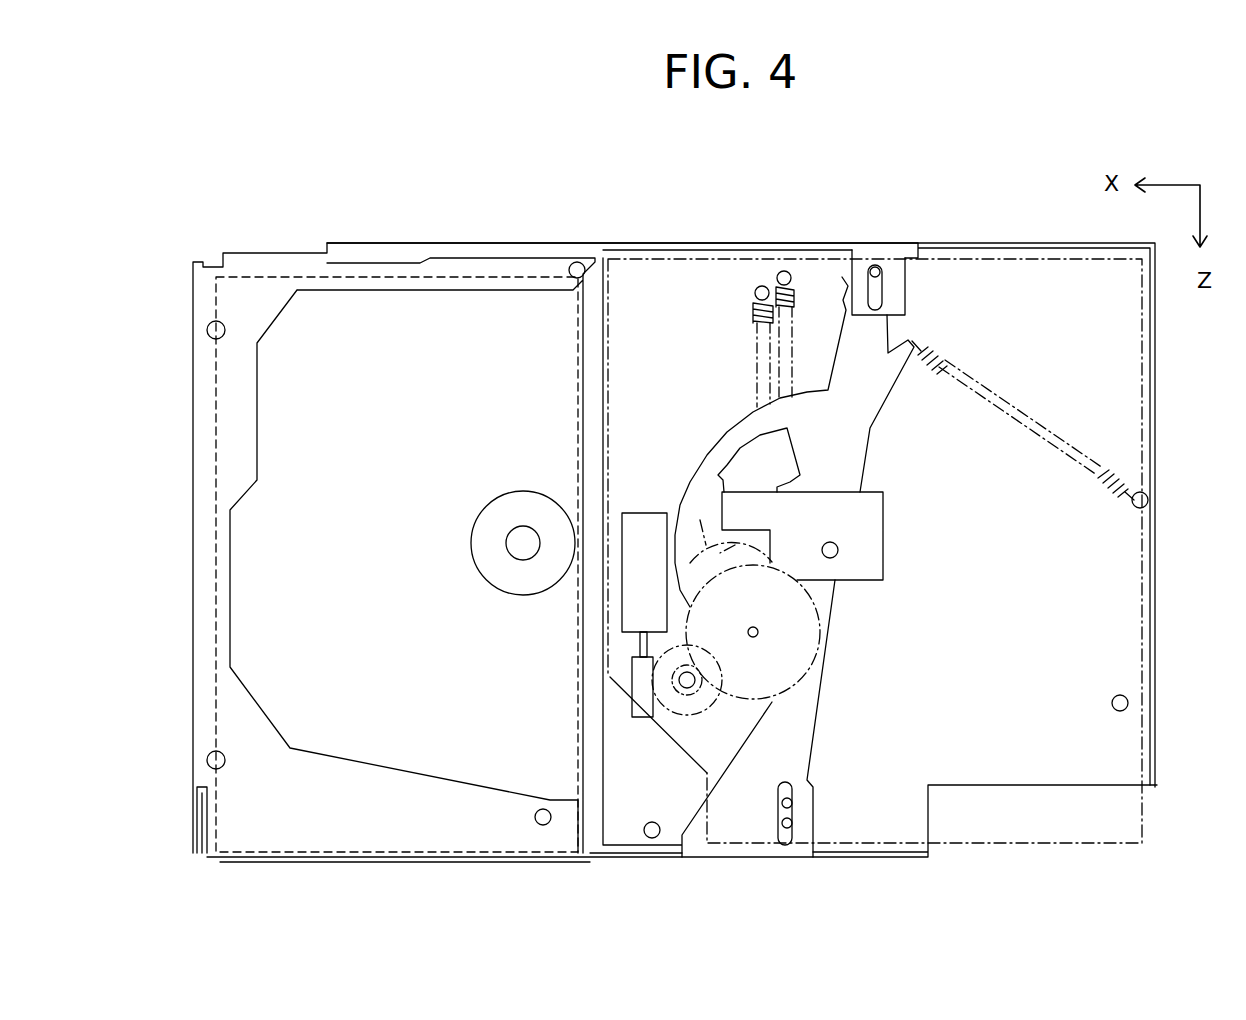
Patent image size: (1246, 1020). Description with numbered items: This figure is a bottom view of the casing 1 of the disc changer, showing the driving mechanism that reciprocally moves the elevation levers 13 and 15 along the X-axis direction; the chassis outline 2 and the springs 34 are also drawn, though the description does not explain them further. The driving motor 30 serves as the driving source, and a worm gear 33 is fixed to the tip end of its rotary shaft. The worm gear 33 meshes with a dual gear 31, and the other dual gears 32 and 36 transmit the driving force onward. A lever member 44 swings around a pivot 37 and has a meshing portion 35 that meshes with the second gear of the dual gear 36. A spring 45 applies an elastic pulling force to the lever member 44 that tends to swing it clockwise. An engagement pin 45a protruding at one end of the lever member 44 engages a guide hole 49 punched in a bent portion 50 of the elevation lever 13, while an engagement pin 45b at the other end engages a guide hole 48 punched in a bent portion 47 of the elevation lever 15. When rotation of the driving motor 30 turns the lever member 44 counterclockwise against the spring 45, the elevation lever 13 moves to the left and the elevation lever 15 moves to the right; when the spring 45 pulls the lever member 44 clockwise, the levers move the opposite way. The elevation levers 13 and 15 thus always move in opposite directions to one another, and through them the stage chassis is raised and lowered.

The casing 1 is at (1068, 242).
The chassis 2 is at (1007, 258).
The elevation lever 13 is at (640, 242).
The elevation lever 15 is at (437, 860).
The driving motor 30 is at (648, 513).
The dual gear 31 is at (707, 708).
The dual gear 32 is at (803, 677).
The worm gear 33 is at (628, 685).
The springs 34 is at (803, 290).
The meshing portion 35 is at (698, 545).
The dual gear 36 is at (678, 513).
The pivot 37 is at (838, 552).
The lever member 44 is at (873, 442).
The spring 45 is at (1067, 437).
The engagement pin 45a is at (874, 265).
The engagement pin 45b is at (792, 827).
The bent portion 47 is at (725, 855).
The guide hole 48 is at (792, 812).
The guide hole 49 is at (862, 275).
The bent portion 50 is at (908, 287).